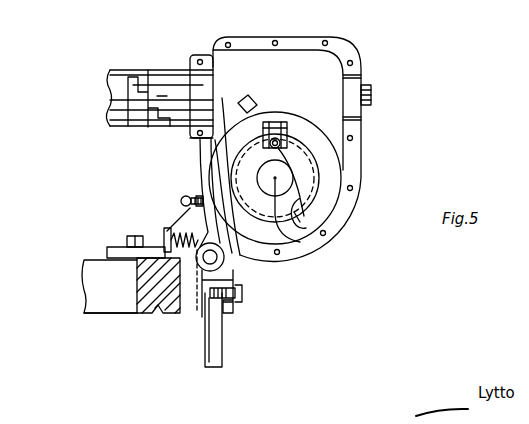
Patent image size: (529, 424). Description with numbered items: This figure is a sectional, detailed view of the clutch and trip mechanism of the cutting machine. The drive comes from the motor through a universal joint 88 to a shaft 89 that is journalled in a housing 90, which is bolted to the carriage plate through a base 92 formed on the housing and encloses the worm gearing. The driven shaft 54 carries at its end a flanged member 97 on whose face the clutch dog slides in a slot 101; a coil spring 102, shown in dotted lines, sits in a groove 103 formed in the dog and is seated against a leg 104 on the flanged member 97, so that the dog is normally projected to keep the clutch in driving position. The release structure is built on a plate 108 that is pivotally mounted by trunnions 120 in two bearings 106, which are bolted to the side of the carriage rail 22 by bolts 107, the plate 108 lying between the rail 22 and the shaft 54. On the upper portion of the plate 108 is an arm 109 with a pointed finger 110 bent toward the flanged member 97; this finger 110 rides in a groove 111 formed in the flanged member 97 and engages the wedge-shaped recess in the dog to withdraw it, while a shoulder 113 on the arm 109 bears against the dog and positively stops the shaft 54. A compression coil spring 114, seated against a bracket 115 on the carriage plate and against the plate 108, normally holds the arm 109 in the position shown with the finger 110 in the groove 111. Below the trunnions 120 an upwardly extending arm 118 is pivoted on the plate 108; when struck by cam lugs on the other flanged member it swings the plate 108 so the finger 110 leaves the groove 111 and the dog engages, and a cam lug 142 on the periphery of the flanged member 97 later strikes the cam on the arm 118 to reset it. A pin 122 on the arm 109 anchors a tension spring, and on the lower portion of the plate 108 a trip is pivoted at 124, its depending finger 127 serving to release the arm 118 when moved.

The rail 22 is at (137, 307).
The shaft 54 is at (300, 242).
The universal joint 88 is at (145, 75).
The shaft 89 is at (371, 95).
The housing 90 is at (345, 53).
The base 92 is at (112, 256).
The flanged member 97 is at (290, 208).
The slot 101 is at (283, 138).
The coil spring 102 is at (303, 198).
The groove 103 is at (288, 136).
The leg 104 is at (273, 126).
The bearings 106 is at (150, 286).
The bolts 107 is at (208, 318).
The plate 108 is at (248, 257).
The arm 109 is at (208, 190).
The finger 110 is at (222, 97).
The groove 111 is at (320, 152).
The shoulder 113 is at (226, 157).
The compression coil spring 114 is at (164, 235).
The bracket 115 is at (107, 251).
The arm 118 is at (196, 146).
The trunnions 120 is at (209, 262).
The pin 122 is at (182, 201).
The pivot 124 is at (225, 310).
The finger 127 is at (212, 355).
The cam lug 142 is at (250, 95).